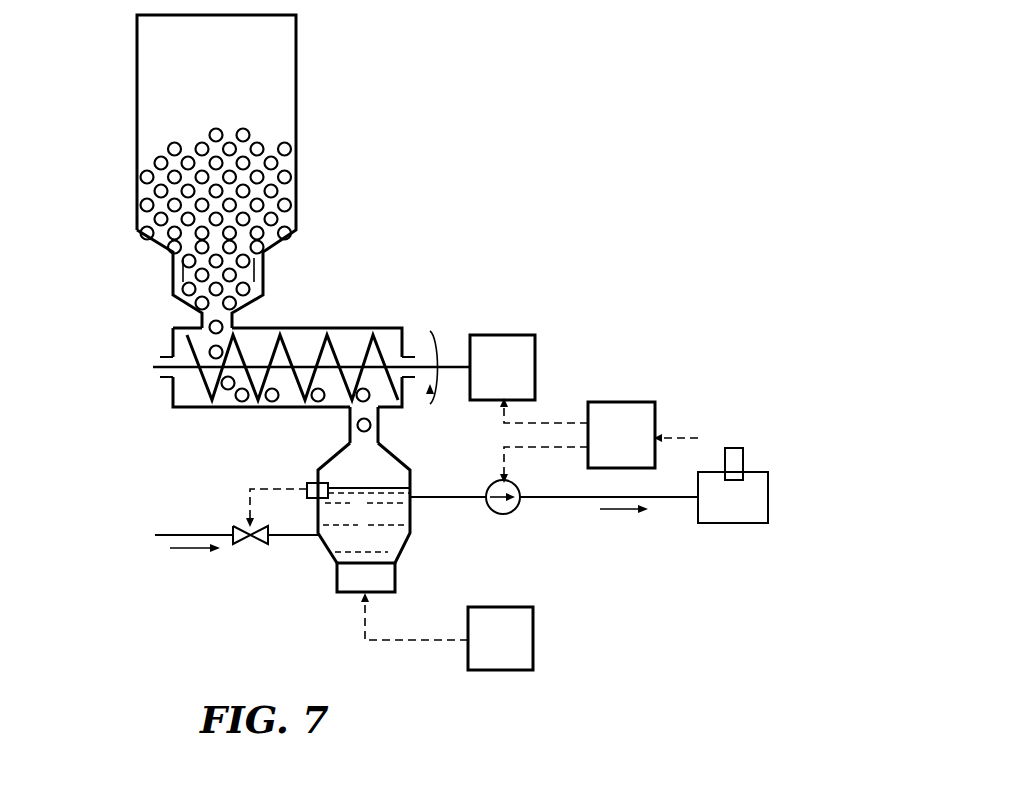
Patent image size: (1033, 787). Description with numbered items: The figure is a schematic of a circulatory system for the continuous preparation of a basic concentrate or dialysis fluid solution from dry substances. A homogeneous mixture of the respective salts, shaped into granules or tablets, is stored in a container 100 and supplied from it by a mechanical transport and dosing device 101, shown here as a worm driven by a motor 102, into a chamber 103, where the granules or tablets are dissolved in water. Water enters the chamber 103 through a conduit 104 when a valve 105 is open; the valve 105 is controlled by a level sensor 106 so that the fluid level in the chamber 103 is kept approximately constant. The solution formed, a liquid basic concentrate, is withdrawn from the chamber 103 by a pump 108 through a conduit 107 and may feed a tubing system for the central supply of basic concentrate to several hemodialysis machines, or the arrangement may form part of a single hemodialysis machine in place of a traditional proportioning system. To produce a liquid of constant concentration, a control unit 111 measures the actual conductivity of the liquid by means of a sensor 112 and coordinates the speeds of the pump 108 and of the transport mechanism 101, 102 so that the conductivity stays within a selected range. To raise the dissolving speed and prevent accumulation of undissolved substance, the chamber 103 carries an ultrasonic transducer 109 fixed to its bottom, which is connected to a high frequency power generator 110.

The container 100 is at (292, 98).
The mechanical transport and dosing device 101 is at (340, 338).
The motor 102 is at (530, 353).
The chamber 103 is at (398, 530).
The conduit 104 is at (293, 540).
The valve 105 is at (238, 525).
The level sensor 106 is at (306, 484).
The conduit 107 is at (428, 493).
The pump 108 is at (517, 508).
The ultrasonic transducer 109 is at (338, 582).
The high frequency power generator 110 is at (532, 636).
The control unit 111 is at (637, 405).
The sensor 112 is at (737, 522).